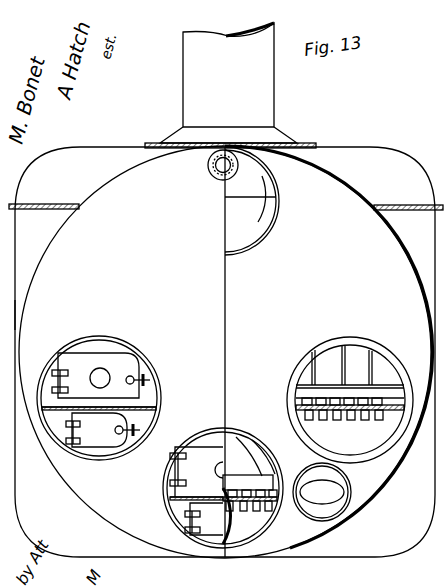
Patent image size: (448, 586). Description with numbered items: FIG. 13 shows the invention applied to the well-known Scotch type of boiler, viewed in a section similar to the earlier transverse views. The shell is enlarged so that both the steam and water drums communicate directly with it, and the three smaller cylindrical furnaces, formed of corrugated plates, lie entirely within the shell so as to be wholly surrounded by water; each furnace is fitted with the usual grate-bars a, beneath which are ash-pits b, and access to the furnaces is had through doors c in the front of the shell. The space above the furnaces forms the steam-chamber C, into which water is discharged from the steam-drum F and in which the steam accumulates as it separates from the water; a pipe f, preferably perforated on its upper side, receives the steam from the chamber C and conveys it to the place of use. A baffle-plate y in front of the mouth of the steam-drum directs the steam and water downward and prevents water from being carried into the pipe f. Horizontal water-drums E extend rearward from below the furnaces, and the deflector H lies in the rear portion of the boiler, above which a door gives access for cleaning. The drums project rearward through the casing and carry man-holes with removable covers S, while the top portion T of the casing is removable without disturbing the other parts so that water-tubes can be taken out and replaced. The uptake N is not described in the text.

The chimney N is at (230, 85).
The top portion of the casing T is at (372, 155).
The steam-chamber C is at (226, 352).
The deflector H is at (89, 317).
The water-drum E is at (262, 238).
The baffle-plate y is at (262, 191).
The pipe f is at (231, 168).
The door c is at (160, 442).
The ash-pit b is at (368, 368).
The grate-bar a is at (360, 418).
The steam-drum F is at (352, 483).
The man-hole cover S is at (322, 492).